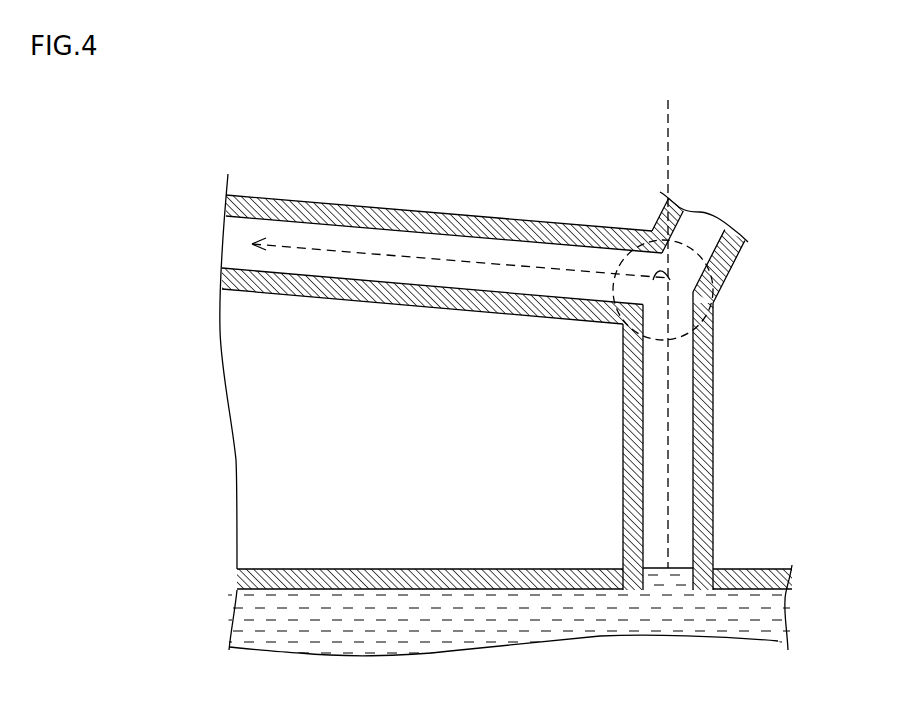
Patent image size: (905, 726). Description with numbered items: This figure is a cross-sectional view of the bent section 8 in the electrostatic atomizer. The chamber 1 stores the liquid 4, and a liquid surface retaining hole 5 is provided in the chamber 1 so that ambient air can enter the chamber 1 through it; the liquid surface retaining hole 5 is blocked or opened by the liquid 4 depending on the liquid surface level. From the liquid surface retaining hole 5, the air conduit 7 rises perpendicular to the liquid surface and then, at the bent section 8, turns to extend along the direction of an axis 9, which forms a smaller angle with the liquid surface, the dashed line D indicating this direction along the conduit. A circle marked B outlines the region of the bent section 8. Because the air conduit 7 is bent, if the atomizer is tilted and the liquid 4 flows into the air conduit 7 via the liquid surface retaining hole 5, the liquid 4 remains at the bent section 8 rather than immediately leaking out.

The chamber 1 is at (345, 634).
The liquid 4 is at (776, 608).
The liquid surface retaining hole 5 is at (685, 556).
The air conduit 7 is at (339, 242).
The bent section 8 is at (693, 245).
The axis 9 is at (478, 262).
The bend region B is at (658, 278).
The flow direction D is at (246, 243).